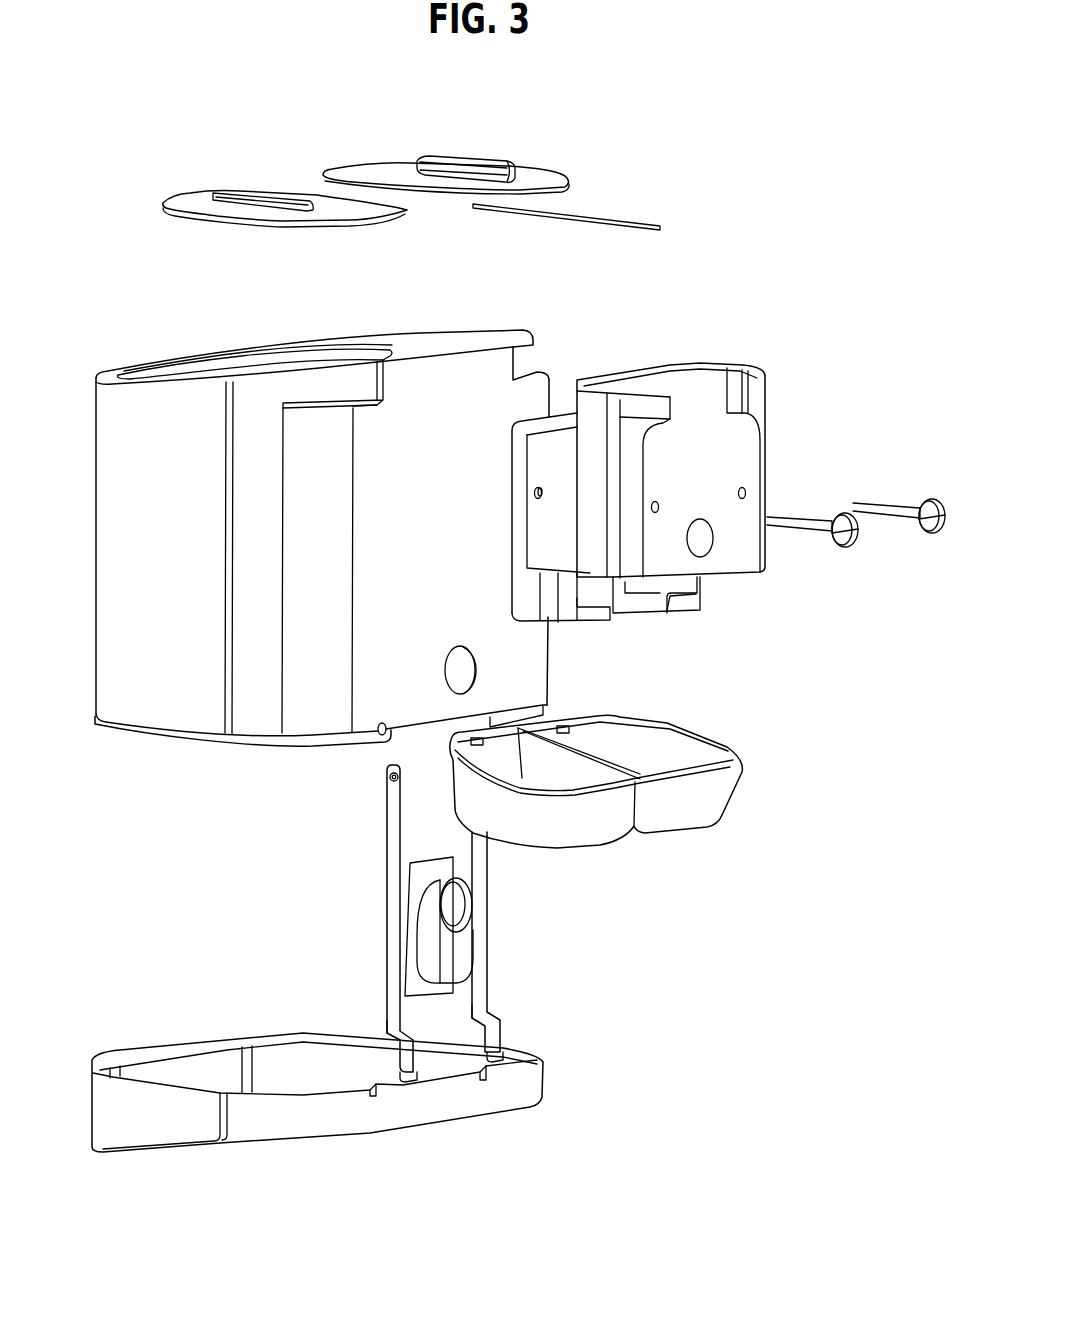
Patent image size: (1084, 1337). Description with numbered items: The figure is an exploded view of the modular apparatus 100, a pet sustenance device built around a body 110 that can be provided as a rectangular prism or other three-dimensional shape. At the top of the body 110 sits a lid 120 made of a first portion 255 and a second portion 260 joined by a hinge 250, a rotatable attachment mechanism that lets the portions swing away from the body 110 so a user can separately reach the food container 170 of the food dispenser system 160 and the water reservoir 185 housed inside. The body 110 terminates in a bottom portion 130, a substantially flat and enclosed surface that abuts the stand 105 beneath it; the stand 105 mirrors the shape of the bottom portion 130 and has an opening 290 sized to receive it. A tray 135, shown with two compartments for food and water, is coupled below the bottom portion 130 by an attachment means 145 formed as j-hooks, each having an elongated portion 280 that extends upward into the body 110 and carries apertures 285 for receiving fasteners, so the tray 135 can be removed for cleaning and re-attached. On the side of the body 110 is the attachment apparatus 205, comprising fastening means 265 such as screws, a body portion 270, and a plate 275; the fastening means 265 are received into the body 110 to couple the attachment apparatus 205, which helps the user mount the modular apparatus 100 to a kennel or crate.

The modular apparatus 100 is at (150, 126).
The stand 105 is at (137, 1160).
The body 110 is at (186, 751).
The lid 120 is at (390, 150).
The bottom portion 130 is at (100, 688).
The tray 135 is at (737, 802).
The attachment means 145 is at (384, 1032).
The food dispenser system 160 is at (455, 948).
The food container 170 is at (493, 398).
The water reservoir 185 is at (168, 528).
The attachment apparatus 205 is at (798, 442).
The hinge 250 is at (625, 217).
The first portion 255 is at (543, 178).
The second portion 260 is at (192, 205).
The fastening means 265 is at (930, 538).
The body portion 270 is at (722, 552).
The plate 275 is at (673, 608).
The elongated portion 280 is at (396, 838).
The apertures 285 is at (390, 778).
The opening 290 is at (300, 1075).